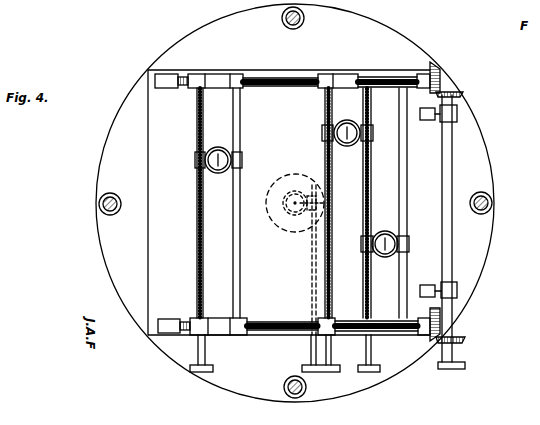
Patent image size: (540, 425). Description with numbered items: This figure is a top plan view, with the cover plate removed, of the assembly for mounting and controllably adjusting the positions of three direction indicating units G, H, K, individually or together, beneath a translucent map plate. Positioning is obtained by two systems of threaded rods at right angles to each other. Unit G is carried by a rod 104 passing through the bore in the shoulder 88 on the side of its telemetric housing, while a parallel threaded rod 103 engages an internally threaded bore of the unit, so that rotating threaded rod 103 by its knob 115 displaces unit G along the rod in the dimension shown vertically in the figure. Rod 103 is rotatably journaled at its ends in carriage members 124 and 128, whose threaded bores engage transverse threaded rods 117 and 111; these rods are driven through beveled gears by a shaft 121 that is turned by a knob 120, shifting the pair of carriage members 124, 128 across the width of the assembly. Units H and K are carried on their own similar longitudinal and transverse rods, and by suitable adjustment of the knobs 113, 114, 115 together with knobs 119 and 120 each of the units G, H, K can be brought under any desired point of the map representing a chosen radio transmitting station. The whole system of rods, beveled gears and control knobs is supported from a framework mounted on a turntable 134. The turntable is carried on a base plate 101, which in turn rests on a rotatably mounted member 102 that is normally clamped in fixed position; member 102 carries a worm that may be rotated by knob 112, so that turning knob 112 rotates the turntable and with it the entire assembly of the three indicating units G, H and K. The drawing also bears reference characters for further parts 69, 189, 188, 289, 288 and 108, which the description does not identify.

The turntable 134 is at (148, 250).
The carriage member 124 is at (202, 77).
The threaded rod 117 is at (183, 75).
The knob 119 is at (283, 74).
The threaded rod 103 is at (197, 245).
The rod 104 is at (332, 197).
The direction indicating unit G is at (218, 147).
The direction indicating unit H is at (347, 121).
The direction indicating unit K is at (385, 231).
The collar 69 is at (195, 158).
The shoulder 88 is at (242, 157).
The collar 189 is at (322, 132).
The collar 188 is at (373, 132).
The collar 289 is at (362, 250).
The collar 288 is at (409, 240).
The shaft 121 is at (452, 158).
The knob 120 is at (455, 370).
The carriage member 128 is at (218, 336).
The knob 115 is at (199, 372).
The knob 112 is at (302, 368).
The knob 113 is at (330, 372).
The knob 114 is at (370, 372).
The threaded rod 111 is at (183, 338).
The rotatably mounted member 102 is at (296, 195).
The base plate 101 is at (283, 228).
The pin 108 is at (325, 203).